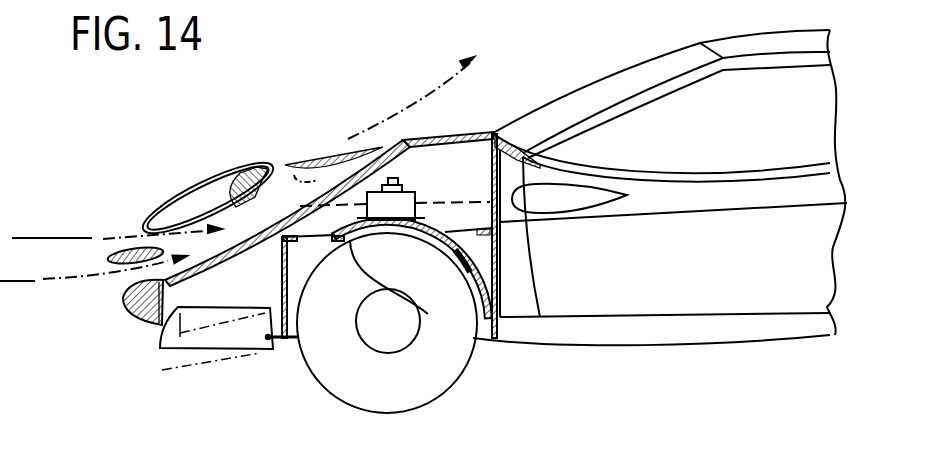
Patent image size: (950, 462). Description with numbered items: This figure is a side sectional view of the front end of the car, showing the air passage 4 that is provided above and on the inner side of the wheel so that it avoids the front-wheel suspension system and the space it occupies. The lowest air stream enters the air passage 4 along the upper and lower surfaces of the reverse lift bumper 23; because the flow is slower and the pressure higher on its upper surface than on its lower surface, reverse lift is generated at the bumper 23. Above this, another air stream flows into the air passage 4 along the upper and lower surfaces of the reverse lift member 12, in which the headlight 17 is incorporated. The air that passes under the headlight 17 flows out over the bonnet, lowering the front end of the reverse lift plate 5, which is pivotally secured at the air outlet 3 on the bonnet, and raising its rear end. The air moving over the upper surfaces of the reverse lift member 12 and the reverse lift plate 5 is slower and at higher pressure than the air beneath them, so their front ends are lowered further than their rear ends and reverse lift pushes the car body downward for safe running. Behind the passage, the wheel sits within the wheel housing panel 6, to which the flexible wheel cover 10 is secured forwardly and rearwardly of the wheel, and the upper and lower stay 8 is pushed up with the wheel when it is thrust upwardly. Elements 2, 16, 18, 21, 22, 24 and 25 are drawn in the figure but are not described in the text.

The front end of vehicle body 2 is at (143, 235).
The air outlet 3 is at (397, 147).
The air passage 4 is at (280, 207).
The reverse lift plate 5 is at (311, 153).
The wheel housing panel 6 is at (480, 248).
The upper and lower stay 8 is at (452, 263).
The wheel cover 10 is at (495, 133).
The reverse lift member 12 is at (197, 193).
The hood line 16 is at (447, 213).
The headlight 17 is at (245, 173).
The lower front panel 18 is at (222, 340).
The front spoiler lip 21 is at (142, 320).
The air flow path 22 is at (328, 155).
The reverse lift bumper 23 is at (110, 255).
The spoiler blade 24 is at (110, 259).
The spoiler lower edge 25 is at (107, 262).